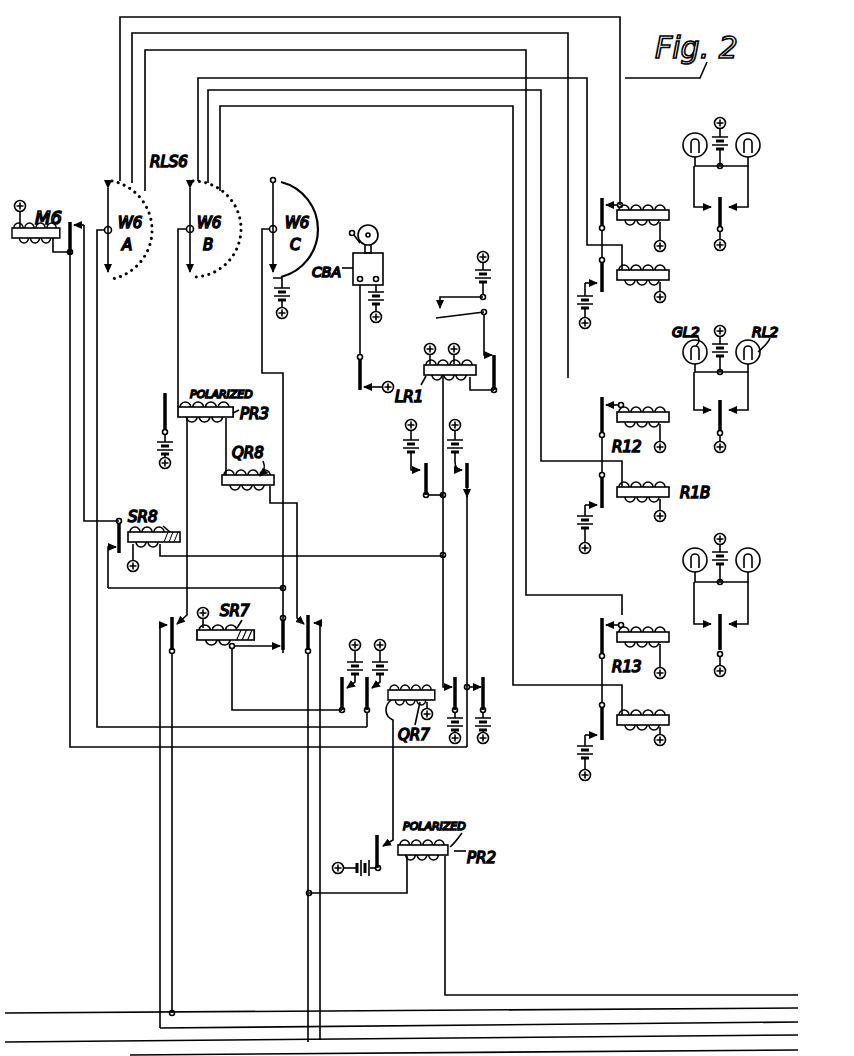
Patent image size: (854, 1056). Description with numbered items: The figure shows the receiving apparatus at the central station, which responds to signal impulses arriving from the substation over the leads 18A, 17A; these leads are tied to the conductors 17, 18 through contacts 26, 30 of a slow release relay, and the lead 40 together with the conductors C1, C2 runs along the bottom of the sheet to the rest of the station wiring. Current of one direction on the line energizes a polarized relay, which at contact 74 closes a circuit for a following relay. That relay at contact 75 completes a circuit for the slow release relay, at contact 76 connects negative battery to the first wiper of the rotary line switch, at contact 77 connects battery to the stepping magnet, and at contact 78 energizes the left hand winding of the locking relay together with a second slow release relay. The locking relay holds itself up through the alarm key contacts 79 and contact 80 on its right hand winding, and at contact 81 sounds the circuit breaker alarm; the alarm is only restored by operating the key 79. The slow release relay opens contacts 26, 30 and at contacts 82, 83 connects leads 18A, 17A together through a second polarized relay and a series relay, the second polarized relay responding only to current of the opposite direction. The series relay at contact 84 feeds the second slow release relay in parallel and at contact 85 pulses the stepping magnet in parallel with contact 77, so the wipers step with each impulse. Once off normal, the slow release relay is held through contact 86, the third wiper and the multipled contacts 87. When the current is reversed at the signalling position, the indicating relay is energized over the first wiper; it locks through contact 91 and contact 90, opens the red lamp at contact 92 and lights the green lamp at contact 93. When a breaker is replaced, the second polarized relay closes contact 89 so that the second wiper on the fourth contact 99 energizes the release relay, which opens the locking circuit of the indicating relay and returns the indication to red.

The fourth contact 99 is at (212, 181).
The multipled contacts 87 is at (318, 204).
The alarm bell key contacts 79 is at (449, 308).
The contact 80 is at (482, 356).
The contact 81 is at (368, 390).
The contact 89 is at (170, 394).
The contact 84 is at (413, 474).
The contact 85 is at (470, 465).
The contact 90 is at (610, 398).
The contact 91 is at (598, 500).
The contact 93 is at (713, 420).
The contact 92 is at (724, 420).
The contact 82 is at (182, 616).
The contact 30 is at (160, 627).
The contact 83 is at (300, 621).
The contact 26 is at (322, 620).
The contact 86 is at (270, 649).
The contact 75 is at (348, 684).
The contact 76 is at (383, 686).
The contact 78 is at (460, 680).
The contact 77 is at (487, 697).
The contact 74 is at (385, 840).
The lead 18A is at (60, 1013).
The lead 17A is at (95, 1042).
The lead 40 is at (128, 1055).
The line wire C1 is at (595, 995).
The line wire C2 is at (630, 1008).
The conductor 17 is at (712, 1035).
The conductor 18 is at (755, 1022).